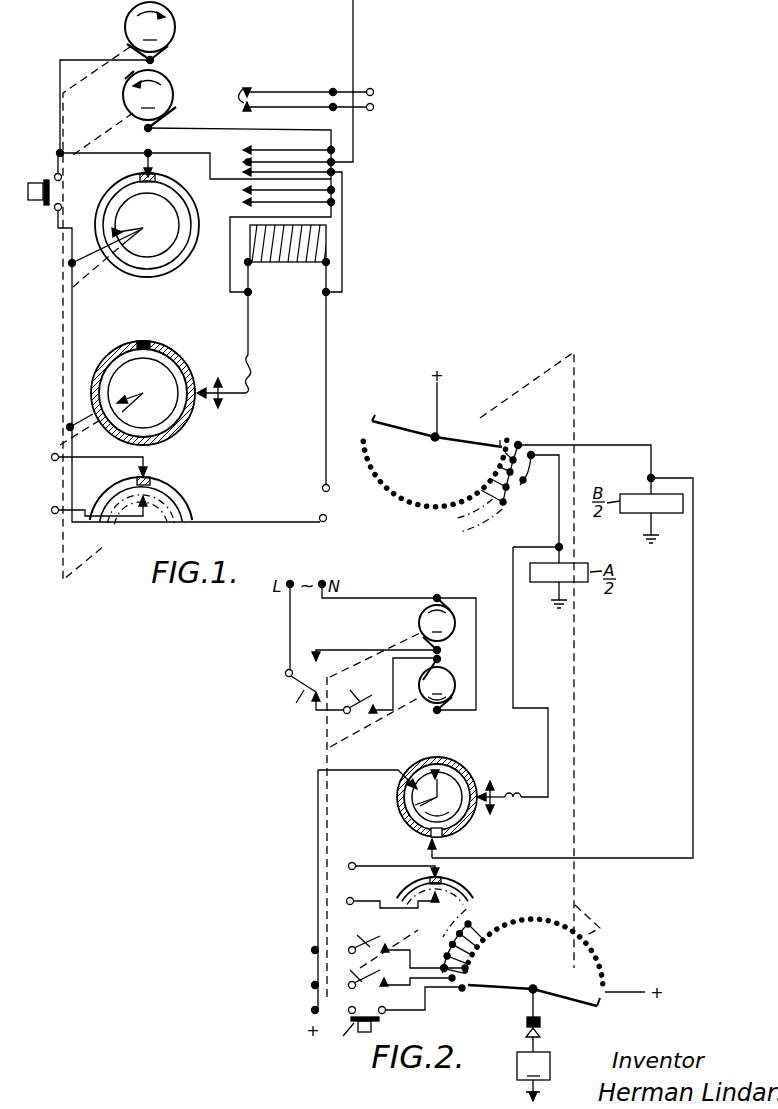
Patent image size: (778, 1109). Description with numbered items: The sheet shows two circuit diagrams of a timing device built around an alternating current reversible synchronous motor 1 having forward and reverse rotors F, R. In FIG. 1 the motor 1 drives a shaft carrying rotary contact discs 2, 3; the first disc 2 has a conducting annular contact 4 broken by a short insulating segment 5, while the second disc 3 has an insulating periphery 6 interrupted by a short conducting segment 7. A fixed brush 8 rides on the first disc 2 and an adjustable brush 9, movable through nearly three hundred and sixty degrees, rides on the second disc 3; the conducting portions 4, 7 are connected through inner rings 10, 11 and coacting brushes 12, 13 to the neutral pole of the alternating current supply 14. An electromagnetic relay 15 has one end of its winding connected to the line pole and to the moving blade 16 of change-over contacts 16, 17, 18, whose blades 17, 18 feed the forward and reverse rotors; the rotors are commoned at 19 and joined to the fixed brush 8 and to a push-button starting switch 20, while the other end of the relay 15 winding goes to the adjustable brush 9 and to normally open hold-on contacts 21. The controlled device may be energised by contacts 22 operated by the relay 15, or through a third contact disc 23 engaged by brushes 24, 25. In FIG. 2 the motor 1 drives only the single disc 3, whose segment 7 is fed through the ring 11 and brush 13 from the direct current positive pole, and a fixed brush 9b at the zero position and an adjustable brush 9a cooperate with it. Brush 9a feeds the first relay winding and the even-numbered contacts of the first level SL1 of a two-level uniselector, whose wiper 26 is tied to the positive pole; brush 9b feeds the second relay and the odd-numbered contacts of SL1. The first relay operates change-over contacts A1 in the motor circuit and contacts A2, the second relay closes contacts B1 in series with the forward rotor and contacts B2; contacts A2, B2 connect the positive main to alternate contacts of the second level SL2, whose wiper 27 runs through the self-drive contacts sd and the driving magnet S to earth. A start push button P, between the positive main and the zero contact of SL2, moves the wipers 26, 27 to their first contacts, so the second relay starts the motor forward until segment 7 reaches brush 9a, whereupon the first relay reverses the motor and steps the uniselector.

In FIG. 1, the reversible synchronous motor 1 is at (193, 2).
In FIG. 2, the reversible synchronous motor 1 is at (435, 592).
In FIG. 1, the first rotary contact disc 2 is at (150, 219).
In FIG. 1, the second rotary contact disc 3 is at (151, 388).
In FIG. 2, the second rotary contact disc 3 is at (444, 805).
In FIG. 1, the annular contact 4 is at (112, 193).
In FIG. 1, the insulating segment 5 is at (138, 179).
In FIG. 1, the insulating periphery 6 is at (124, 346).
In FIG. 1, the conducting segment 7 is at (150, 341).
In FIG. 2, the conducting segment 7 is at (442, 836).
In FIG. 1, the fixed brush 8 is at (157, 176).
In FIG. 1, the adjustable brush 9 is at (201, 384).
In FIG. 2, the adjustable brush 9a is at (483, 793).
In FIG. 2, the fixed brush 9b is at (427, 845).
In FIG. 1, the inner ring 10 is at (178, 244).
In FIG. 1, the inner ring 11 is at (160, 418).
In FIG. 2, the inner ring 11 is at (410, 800).
In FIG. 1, the brush 12 is at (116, 230).
In FIG. 1, the brush 13 is at (130, 390).
In FIG. 2, the brush 13 is at (434, 775).
In FIG. 1, the alternating current supply 14 is at (305, 511).
In FIG. 1, the electromagnetic relay 15 is at (272, 262).
In FIG. 1, the moving blade 16 is at (250, 159).
In FIG. 1, the change-over contact blade 17 is at (244, 172).
In FIG. 1, the change-over contact blade 18 is at (241, 149).
In FIG. 1, the common connection 19 is at (160, 57).
In FIG. 1, the starting switch 20 is at (56, 176).
In FIG. 1, the hold-on contacts 21 is at (243, 190).
In FIG. 1, the contacts 22 is at (249, 88).
In FIG. 1, the third contact disc 23 is at (178, 491).
In FIG. 2, the third contact disc 23 is at (470, 892).
In FIG. 1, the brush 24 is at (153, 471).
In FIG. 2, the brush 24 is at (443, 877).
In FIG. 1, the brush 25 is at (143, 522).
In FIG. 2, the brush 25 is at (437, 903).
In FIG. 2, the wiper 26 is at (441, 437).
In FIG. 2, the wiper 27 is at (509, 990).
In FIG. 2, the self-drive contacts sd is at (542, 1031).
In FIG. 2, the first level SL1 is at (448, 477).
In FIG. 2, the second level SL2 is at (522, 957).
In FIG. 2, the change-over contacts A1 is at (299, 687).
In FIG. 2, the normally open contacts B1 is at (361, 692).
In FIG. 2, the normally open contacts A2 is at (390, 977).
In FIG. 2, the normally open contacts B2 is at (401, 941).
In FIG. 2, the start push button P is at (397, 1020).
In FIG. 2, the uniselector driving magnet S is at (533, 1076).